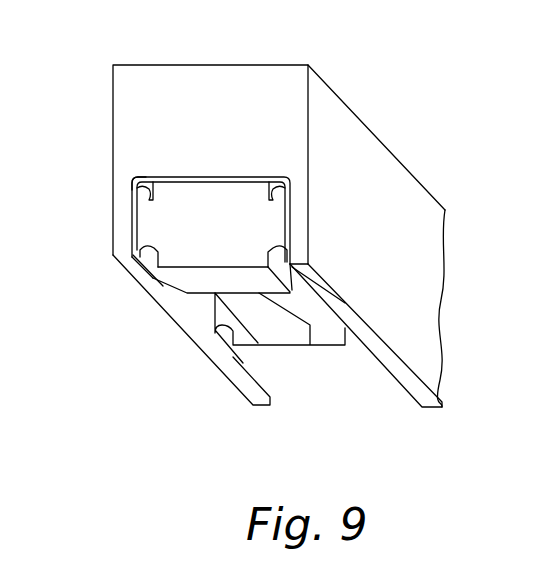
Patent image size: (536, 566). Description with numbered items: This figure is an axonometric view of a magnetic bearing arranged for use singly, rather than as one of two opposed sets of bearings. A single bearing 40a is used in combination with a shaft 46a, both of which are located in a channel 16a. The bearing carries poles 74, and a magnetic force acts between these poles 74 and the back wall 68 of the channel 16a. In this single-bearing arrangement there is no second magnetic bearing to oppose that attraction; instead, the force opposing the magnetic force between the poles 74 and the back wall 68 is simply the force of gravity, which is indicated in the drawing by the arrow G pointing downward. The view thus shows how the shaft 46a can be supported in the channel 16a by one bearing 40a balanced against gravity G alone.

The channel 16a is at (273, 82).
The single bearing 40a is at (206, 376).
The shaft 46a is at (131, 177).
The back wall 68 is at (226, 178).
The poles 74 is at (188, 190).
The arrow indicating force of gravity G is at (284, 336).